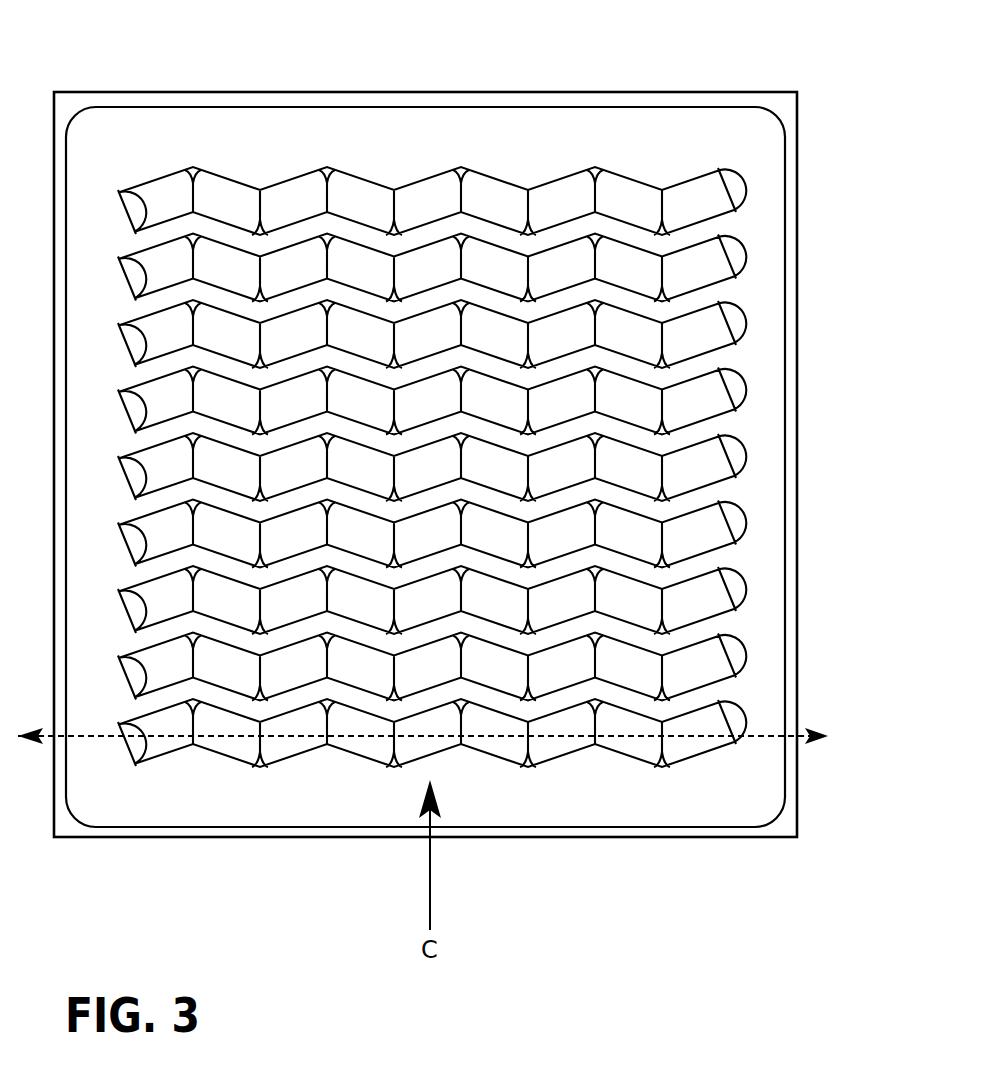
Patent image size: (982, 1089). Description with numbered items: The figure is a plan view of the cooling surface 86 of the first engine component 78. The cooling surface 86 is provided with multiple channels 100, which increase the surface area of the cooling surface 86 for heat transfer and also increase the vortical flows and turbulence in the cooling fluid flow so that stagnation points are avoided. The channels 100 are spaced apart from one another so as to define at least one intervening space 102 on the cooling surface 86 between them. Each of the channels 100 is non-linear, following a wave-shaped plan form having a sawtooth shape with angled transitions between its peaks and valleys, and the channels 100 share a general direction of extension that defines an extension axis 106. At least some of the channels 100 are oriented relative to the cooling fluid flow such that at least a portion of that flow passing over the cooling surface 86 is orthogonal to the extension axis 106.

The first engine component 78 is at (216, 82).
The cooling surface 86 is at (680, 157).
The channels 100 is at (800, 443).
The intervening space 102 is at (777, 253).
The extension axis 106 is at (447, 736).